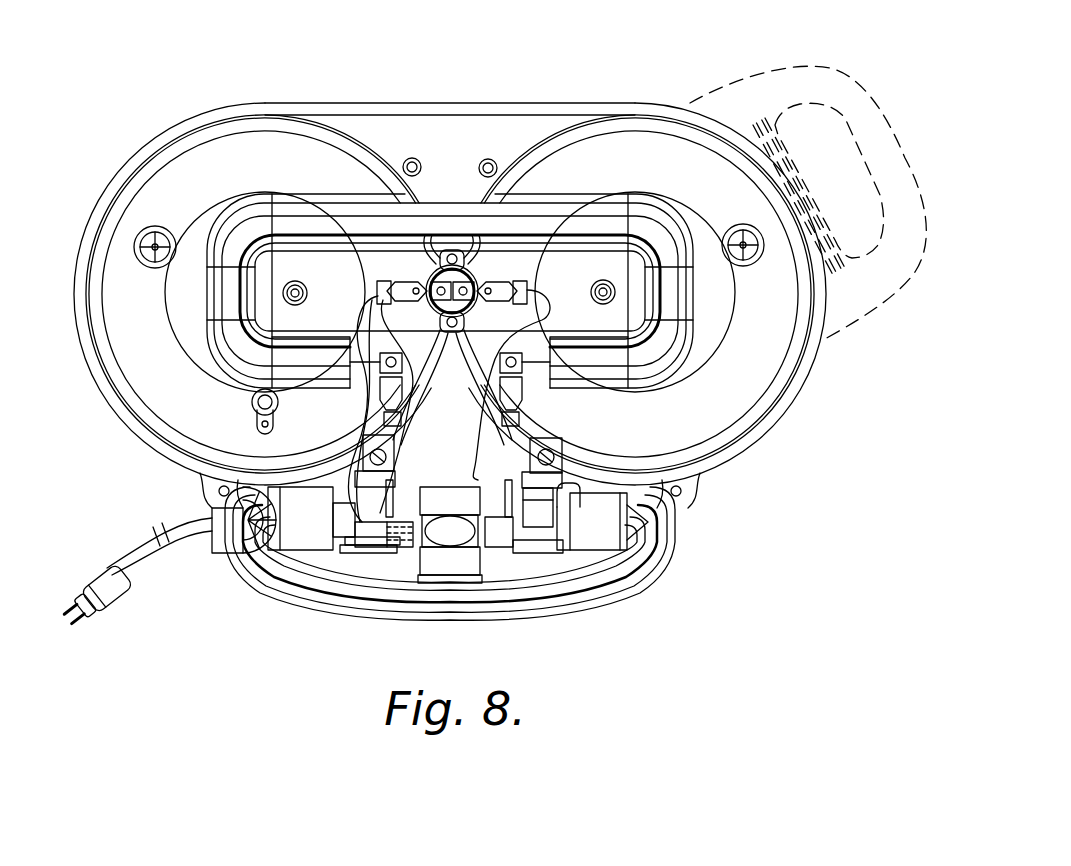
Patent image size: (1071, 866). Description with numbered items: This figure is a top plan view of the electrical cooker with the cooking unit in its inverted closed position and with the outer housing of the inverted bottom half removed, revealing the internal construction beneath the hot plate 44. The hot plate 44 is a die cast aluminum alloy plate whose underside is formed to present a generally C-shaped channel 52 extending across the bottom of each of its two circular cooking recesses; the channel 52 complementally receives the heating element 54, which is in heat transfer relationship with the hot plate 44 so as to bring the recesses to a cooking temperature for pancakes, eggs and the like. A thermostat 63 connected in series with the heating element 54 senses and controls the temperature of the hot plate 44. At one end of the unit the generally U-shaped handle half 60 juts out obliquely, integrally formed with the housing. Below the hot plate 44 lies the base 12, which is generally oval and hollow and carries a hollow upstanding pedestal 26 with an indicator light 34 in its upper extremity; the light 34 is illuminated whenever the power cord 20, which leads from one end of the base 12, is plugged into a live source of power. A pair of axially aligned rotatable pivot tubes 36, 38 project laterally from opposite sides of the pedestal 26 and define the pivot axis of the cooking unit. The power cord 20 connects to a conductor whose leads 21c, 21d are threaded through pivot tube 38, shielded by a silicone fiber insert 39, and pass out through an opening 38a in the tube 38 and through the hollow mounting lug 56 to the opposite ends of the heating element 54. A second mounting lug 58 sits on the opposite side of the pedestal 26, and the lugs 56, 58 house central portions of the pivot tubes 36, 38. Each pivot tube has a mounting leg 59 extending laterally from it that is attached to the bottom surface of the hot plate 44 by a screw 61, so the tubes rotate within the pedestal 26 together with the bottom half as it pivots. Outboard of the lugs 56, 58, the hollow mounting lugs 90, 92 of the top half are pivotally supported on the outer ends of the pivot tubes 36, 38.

The base 12 is at (689, 560).
The power cord 20 is at (137, 550).
The lead 21c is at (362, 428).
The lead 21d is at (362, 317).
The pedestal 26 is at (452, 565).
The indicator light 34 is at (442, 535).
The pivot tube 36 is at (498, 540).
The pivot tube 38 is at (340, 537).
The opening 38a is at (347, 542).
The silicone fiber insert 39 is at (340, 523).
The hot plate 44 is at (445, 105).
The C-shaped channel 52 is at (215, 356).
The heating element 54 is at (360, 222).
The mounting lug 56 is at (367, 550).
The mounting lug 58 is at (540, 550).
The mounting leg 59 is at (533, 487).
The handle half 60 is at (855, 77).
The screw 61 is at (390, 448).
The thermostat 63 is at (470, 283).
The mounting lug 90 is at (247, 578).
The mounting lug 92 is at (600, 545).